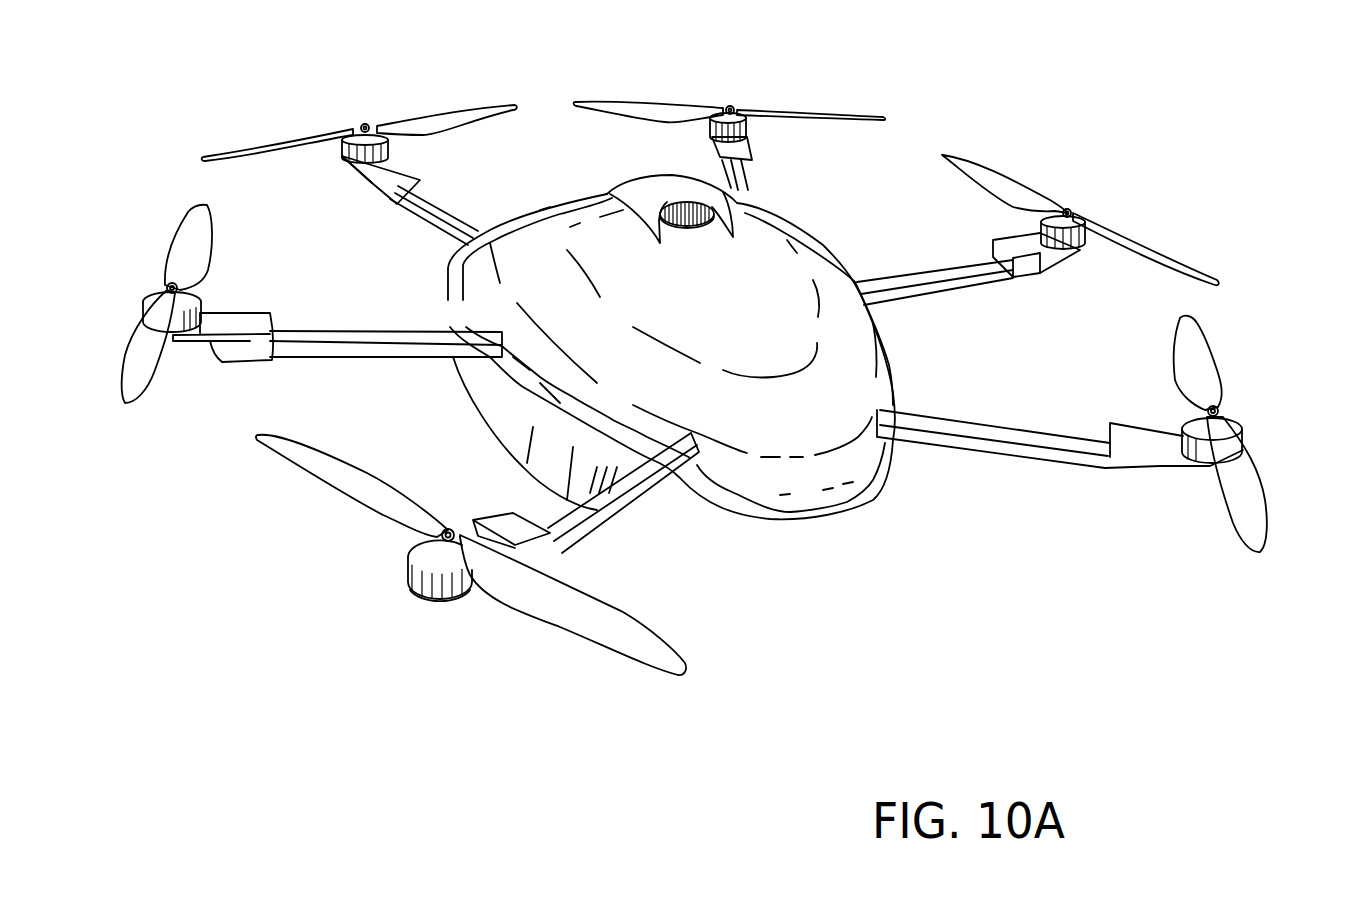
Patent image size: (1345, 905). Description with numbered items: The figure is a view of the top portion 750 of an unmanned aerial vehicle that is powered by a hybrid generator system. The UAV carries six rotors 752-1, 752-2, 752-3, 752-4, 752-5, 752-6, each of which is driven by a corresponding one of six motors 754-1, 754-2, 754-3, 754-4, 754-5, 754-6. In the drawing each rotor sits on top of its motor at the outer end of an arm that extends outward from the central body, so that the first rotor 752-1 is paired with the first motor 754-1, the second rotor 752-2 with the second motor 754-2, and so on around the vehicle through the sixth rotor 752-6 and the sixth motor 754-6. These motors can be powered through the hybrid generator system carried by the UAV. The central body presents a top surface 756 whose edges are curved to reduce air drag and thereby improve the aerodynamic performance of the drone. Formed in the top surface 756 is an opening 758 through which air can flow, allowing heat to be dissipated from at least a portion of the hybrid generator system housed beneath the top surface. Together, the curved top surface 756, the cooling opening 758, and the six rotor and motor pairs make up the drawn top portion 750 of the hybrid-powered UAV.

The top portion 750 is at (193, 85).
The rotor 752-1 is at (1203, 377).
The rotor 752-2 is at (1140, 240).
The rotor 752-3 is at (653, 100).
The rotor 752-4 is at (452, 113).
The rotor 752-5 is at (188, 223).
The rotor 752-6 is at (580, 627).
The motor 754-1 is at (1180, 460).
The motor 754-2 is at (1087, 243).
The motor 754-3 is at (747, 125).
The motor 754-4 is at (340, 157).
The motor 754-5 is at (203, 305).
The motor 754-6 is at (407, 580).
The top surface 756 is at (820, 475).
The opening 758 is at (810, 220).